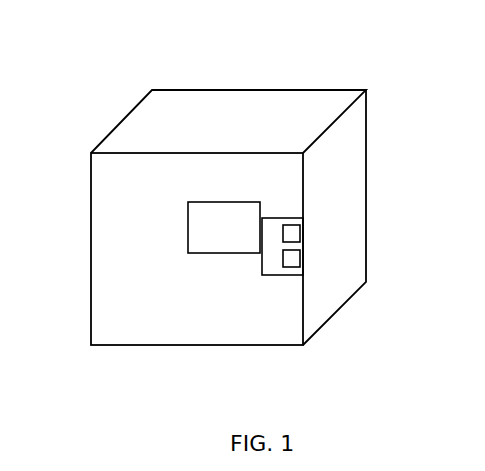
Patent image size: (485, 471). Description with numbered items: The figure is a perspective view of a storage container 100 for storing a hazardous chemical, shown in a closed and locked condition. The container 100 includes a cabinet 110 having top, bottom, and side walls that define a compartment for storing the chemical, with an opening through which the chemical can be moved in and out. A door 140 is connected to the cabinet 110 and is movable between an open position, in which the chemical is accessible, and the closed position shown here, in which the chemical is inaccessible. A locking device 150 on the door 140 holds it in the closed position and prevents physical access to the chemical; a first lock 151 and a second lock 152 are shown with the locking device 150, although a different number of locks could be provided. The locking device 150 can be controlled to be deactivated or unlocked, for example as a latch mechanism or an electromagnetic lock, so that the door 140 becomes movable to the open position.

The storage container 100 is at (263, 61).
The cabinet 110 is at (127, 126).
The door 140 is at (103, 257).
The locking device 150 is at (270, 253).
The first lock 151 is at (292, 231).
The second lock 152 is at (292, 262).